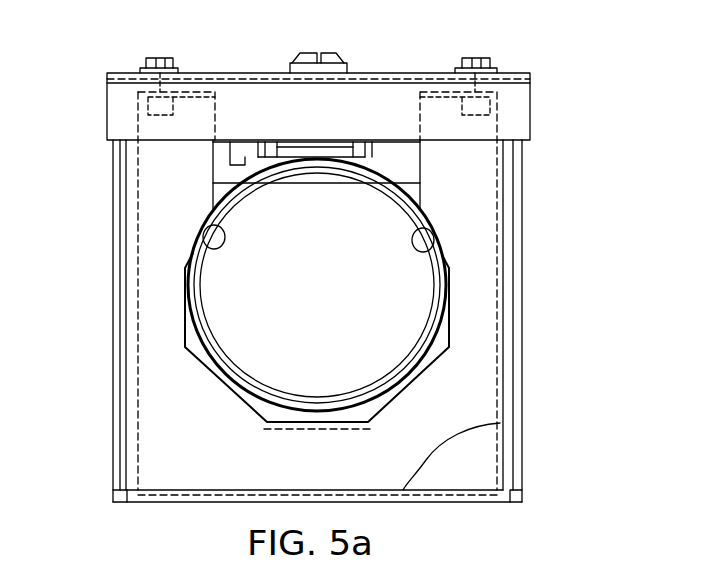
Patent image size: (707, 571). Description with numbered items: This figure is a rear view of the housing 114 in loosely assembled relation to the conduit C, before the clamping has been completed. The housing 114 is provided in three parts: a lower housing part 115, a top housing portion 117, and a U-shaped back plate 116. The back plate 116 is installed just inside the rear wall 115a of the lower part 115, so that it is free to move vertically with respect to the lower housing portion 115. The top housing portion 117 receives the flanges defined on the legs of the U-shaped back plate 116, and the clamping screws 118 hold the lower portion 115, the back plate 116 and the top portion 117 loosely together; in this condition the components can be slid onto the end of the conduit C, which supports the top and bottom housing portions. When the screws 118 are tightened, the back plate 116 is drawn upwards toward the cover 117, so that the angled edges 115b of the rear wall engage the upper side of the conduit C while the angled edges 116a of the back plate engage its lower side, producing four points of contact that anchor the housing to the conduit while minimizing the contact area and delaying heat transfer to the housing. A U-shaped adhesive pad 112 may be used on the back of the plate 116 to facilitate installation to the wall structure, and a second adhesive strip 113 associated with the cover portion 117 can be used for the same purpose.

The U-shaped adhesive pad 112 is at (154, 348).
The second adhesive strip 113 is at (120, 108).
The housing 114 is at (610, 175).
The lower housing part 115 is at (112, 430).
The rear wall 115a is at (458, 464).
The angled edges 115b is at (200, 247).
The back plate 116 is at (128, 185).
The angled edges 116a is at (222, 368).
The top housing portion 117 is at (370, 73).
The clamping screws 118 is at (160, 57).
The conduit C is at (438, 308).